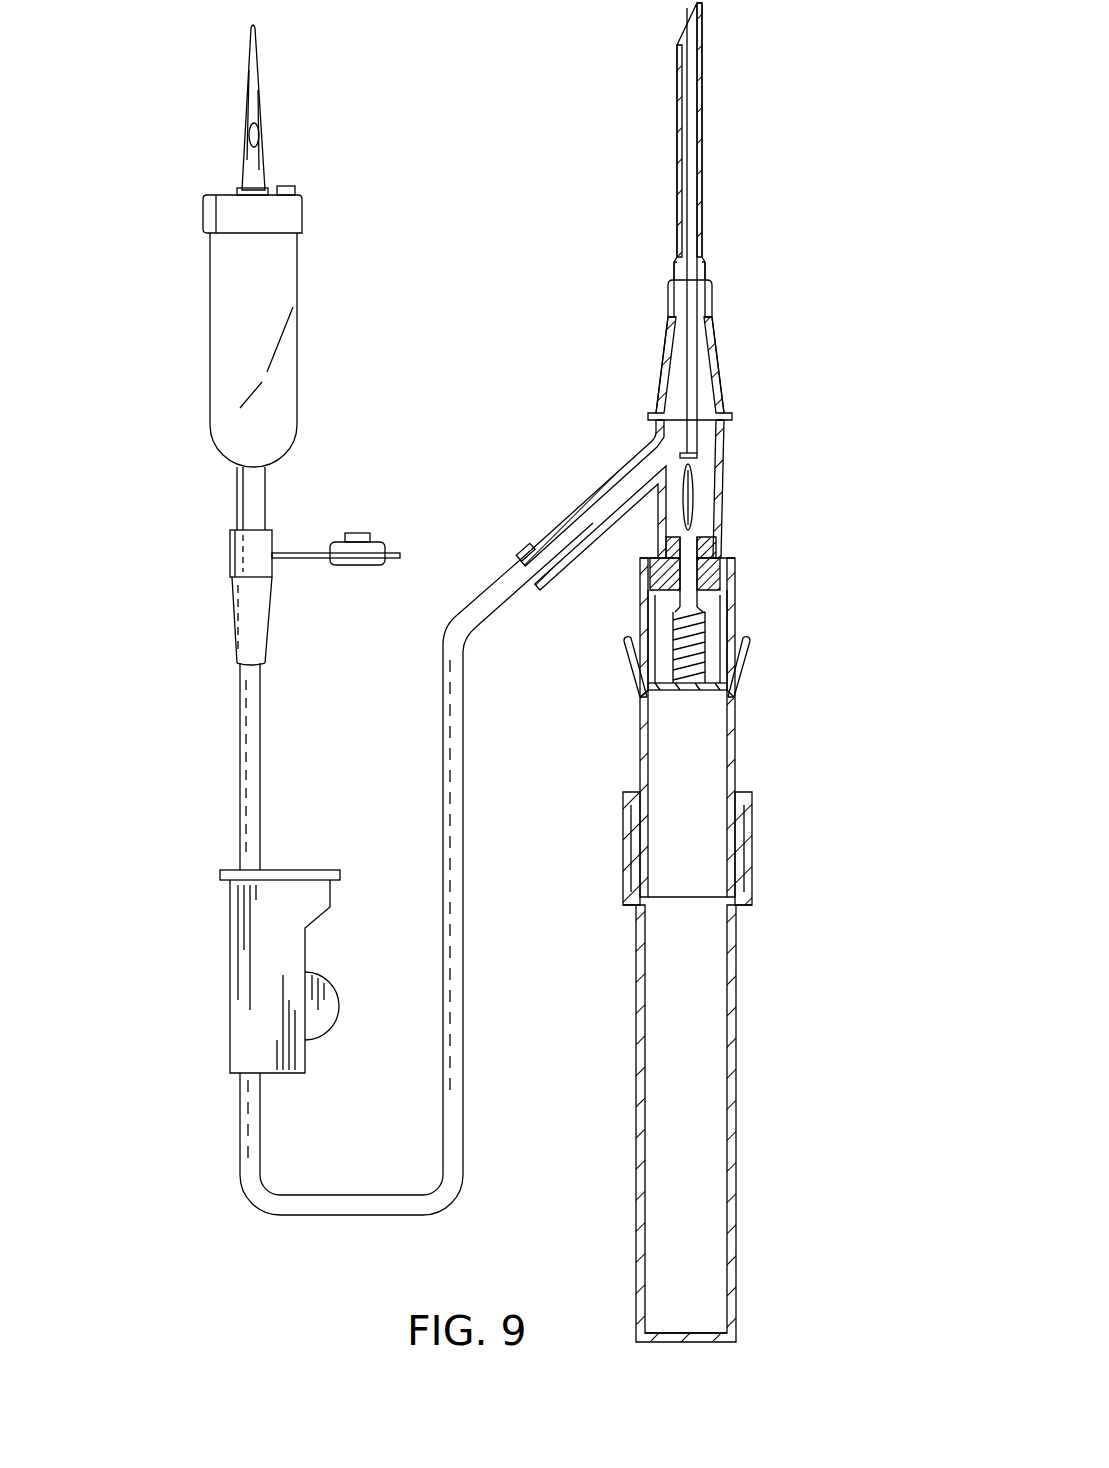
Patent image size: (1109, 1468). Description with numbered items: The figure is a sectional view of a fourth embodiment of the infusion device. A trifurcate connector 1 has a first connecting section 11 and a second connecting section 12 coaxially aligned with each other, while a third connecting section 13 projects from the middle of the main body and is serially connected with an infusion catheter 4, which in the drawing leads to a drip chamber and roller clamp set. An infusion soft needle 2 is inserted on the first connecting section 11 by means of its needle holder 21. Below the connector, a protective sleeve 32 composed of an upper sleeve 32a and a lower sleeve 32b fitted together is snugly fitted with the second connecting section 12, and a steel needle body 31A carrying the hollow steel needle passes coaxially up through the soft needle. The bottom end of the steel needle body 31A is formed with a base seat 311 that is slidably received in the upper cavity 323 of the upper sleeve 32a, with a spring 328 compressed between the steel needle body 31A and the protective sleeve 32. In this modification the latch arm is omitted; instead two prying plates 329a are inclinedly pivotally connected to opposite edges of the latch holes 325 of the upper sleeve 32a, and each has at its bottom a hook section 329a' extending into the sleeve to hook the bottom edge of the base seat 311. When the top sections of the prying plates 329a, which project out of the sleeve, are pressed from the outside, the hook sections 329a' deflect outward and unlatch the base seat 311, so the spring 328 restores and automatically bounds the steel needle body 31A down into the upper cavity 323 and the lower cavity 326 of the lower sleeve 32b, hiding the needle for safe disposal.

The trifurcate connector 1 is at (620, 470).
The infusion soft needle 2 is at (675, 247).
The infusion catheter 4 is at (498, 585).
The first connecting section 11 is at (707, 345).
The second connecting section 12 is at (717, 548).
The third connecting section 13 is at (568, 528).
The needle holder 21 is at (664, 352).
The steel needle body 31A is at (690, 478).
The protective sleeve 32 is at (758, 950).
The upper sleeve 32a is at (740, 768).
The lower sleeve 32b is at (733, 1113).
The base seat 311 is at (683, 690).
The upper cavity 323 is at (652, 812).
The latch hole 325 is at (643, 640).
The lower cavity 326 is at (645, 1050).
The spring 328 is at (700, 612).
The prying plate 329a is at (696, 644).
The hook section 329a' is at (696, 694).